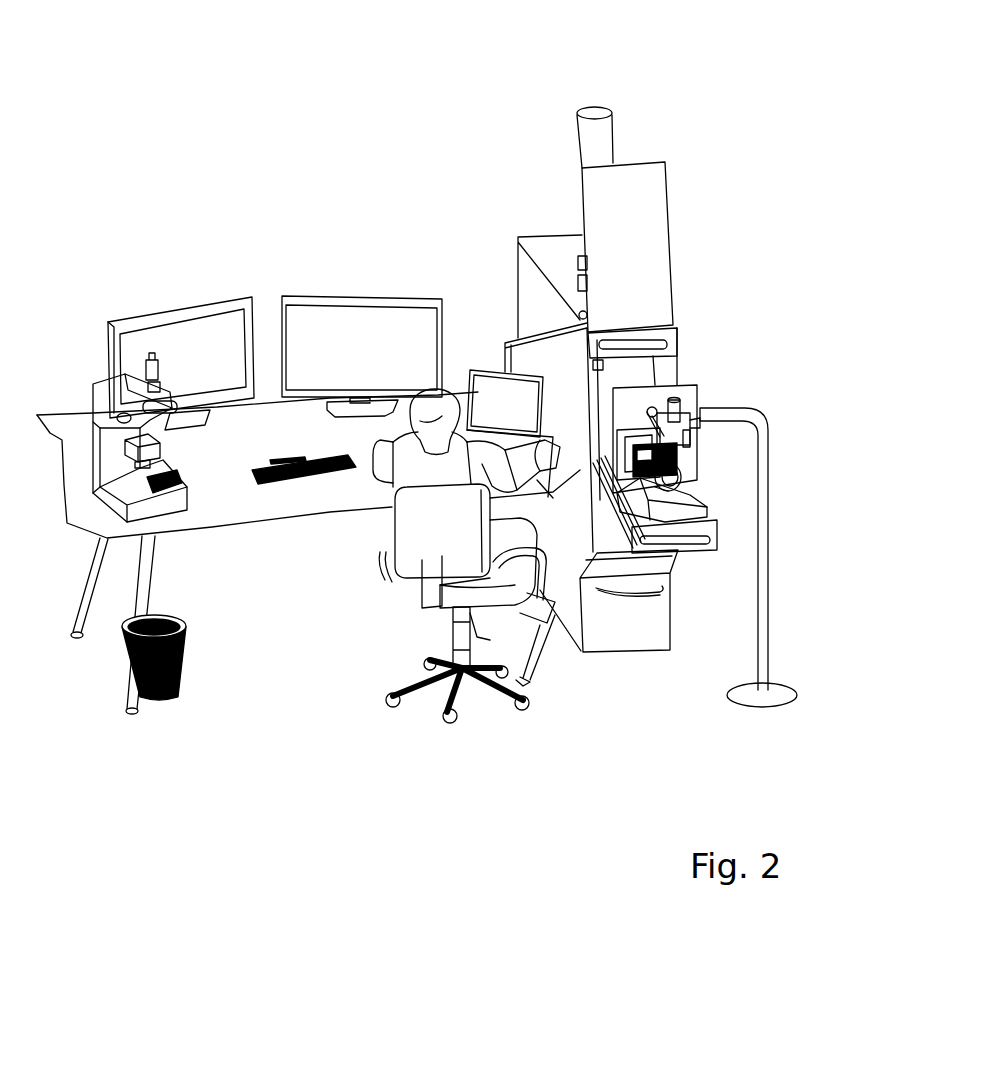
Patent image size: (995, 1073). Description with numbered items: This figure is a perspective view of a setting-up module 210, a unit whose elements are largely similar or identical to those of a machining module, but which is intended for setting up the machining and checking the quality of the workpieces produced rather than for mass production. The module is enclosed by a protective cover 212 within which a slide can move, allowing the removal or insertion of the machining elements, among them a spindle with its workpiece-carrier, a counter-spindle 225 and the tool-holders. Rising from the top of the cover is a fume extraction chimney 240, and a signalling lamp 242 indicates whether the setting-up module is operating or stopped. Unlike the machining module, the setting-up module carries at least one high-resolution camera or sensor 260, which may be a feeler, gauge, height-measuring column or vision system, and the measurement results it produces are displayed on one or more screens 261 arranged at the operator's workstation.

The setting-up module 210 is at (292, 822).
The protective cover 212 is at (532, 317).
The counter-spindle 225 is at (682, 473).
The fume extraction chimney 240 is at (587, 150).
The signalling lamp 242 is at (583, 275).
The sensor or camera 260 is at (677, 428).
The screens 261 is at (317, 327).